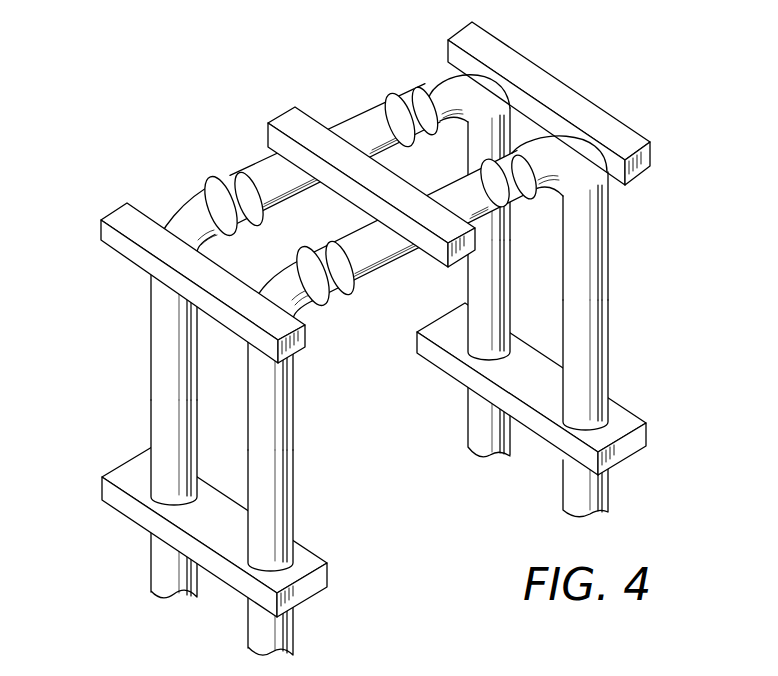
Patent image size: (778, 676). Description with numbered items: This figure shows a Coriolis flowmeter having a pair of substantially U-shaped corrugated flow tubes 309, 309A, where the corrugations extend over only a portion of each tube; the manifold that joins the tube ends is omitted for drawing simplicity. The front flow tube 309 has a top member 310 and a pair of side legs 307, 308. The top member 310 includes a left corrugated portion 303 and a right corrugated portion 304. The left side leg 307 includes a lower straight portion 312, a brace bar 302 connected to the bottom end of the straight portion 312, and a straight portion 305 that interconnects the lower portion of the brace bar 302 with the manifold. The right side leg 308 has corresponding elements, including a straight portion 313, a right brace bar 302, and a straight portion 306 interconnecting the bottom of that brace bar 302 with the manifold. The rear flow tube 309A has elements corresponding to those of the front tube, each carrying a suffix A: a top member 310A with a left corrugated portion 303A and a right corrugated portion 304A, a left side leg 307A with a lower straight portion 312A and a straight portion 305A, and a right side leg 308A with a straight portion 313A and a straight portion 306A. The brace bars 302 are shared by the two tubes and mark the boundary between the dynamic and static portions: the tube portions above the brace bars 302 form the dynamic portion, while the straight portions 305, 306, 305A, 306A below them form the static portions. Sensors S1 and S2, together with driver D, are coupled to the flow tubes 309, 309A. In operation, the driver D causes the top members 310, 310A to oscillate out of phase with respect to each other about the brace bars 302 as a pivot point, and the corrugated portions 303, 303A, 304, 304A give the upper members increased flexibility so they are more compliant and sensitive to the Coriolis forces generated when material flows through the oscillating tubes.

The brace bar 302 is at (325, 577).
The left corrugated portion 303 is at (325, 313).
The left corrugated portion 303A is at (207, 185).
The right corrugated portion 304 is at (527, 213).
The right corrugated portion 304A is at (400, 82).
The straight portion 305 is at (260, 623).
The straight portion 305A is at (164, 565).
The straight portion 306 is at (597, 492).
The straight portion 306A is at (502, 446).
The side leg 307 is at (280, 389).
The side leg 307A is at (167, 311).
The side leg 308 is at (598, 218).
The side leg 308A is at (498, 126).
The flow tube 309 is at (375, 265).
The rear flow tube 309A is at (278, 174).
The top member 310 is at (477, 213).
The top member 310A is at (376, 110).
The lower straight portion 312 is at (280, 523).
The lower straight portion 312A is at (180, 424).
The straight portion 313 is at (597, 381).
The straight portion 313A is at (500, 322).
The sensor S1 is at (122, 248).
The sensor S2 is at (652, 160).
The driver D is at (292, 127).